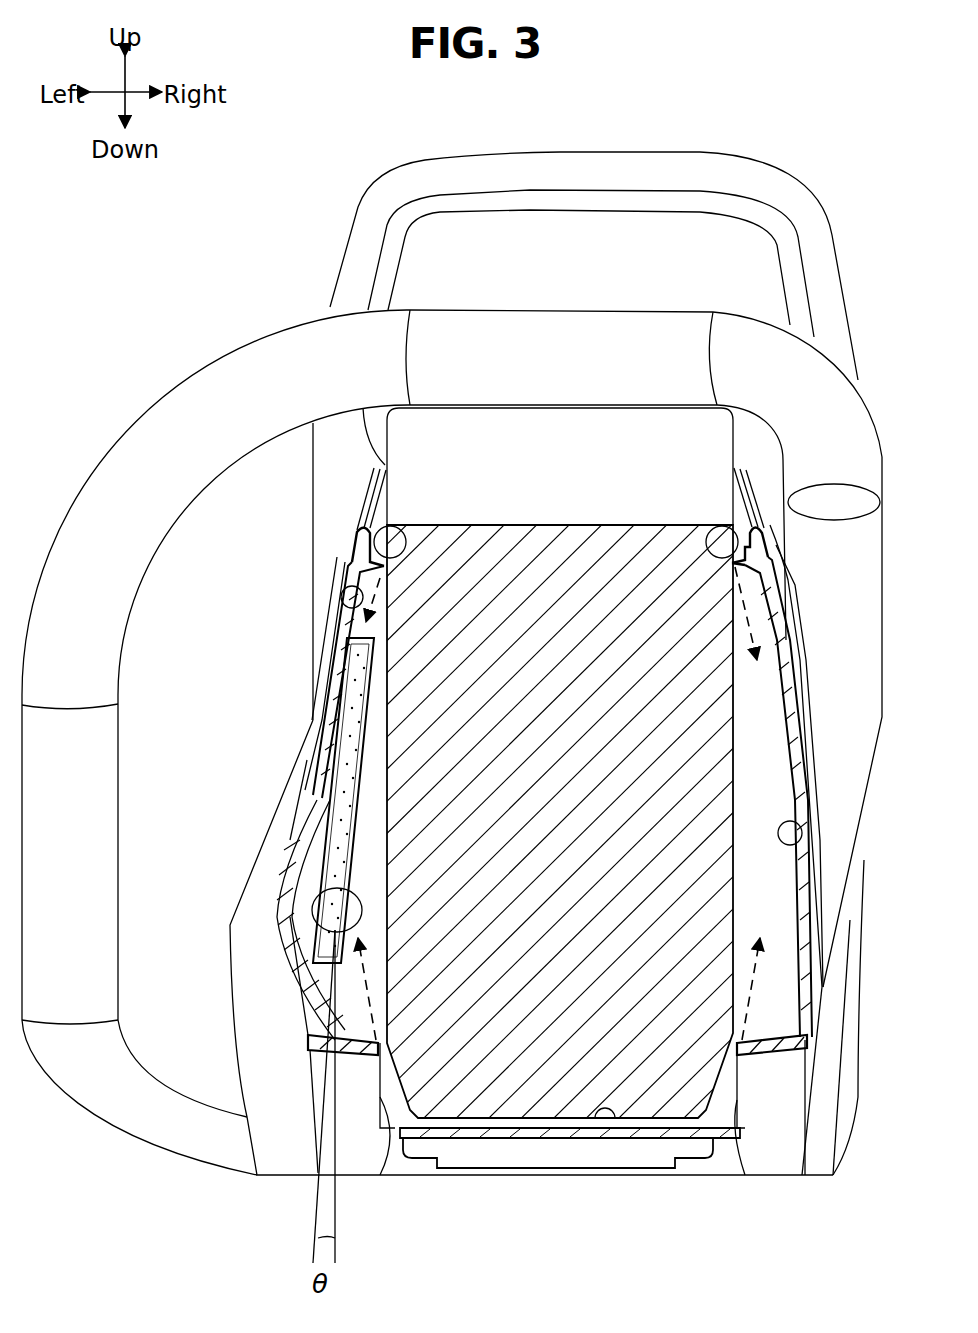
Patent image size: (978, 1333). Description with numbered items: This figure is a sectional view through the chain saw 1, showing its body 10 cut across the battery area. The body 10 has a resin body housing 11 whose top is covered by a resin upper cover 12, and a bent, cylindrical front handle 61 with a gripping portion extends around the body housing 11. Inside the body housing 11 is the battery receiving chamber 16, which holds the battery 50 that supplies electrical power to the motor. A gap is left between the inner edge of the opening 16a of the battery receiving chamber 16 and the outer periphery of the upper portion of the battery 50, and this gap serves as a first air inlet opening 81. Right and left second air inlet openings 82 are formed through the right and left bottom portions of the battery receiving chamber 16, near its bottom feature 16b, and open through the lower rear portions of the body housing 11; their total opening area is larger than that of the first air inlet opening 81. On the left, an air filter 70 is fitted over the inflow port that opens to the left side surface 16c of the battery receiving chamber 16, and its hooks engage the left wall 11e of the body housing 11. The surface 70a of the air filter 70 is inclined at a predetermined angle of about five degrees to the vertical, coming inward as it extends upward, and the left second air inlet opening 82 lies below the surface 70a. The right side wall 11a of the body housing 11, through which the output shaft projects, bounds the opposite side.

The chain saw 1 is at (286, 192).
The body 10 is at (264, 772).
The body housing 11 is at (230, 962).
The right side wall 11a is at (813, 895).
The left wall 11e is at (287, 842).
The upper cover 12 is at (800, 647).
The battery receiving chamber 16 is at (800, 812).
The opening 16a is at (740, 522).
The pad lower protrusion 16b is at (612, 1128).
The left side surface 16c is at (341, 597).
The battery 50 is at (538, 1085).
The front handle 61 is at (243, 365).
The air filter 70 is at (320, 860).
The surface 70a is at (317, 895).
The first air inlet opening 81 is at (362, 524).
The second air inlet opening 82 is at (385, 1140).